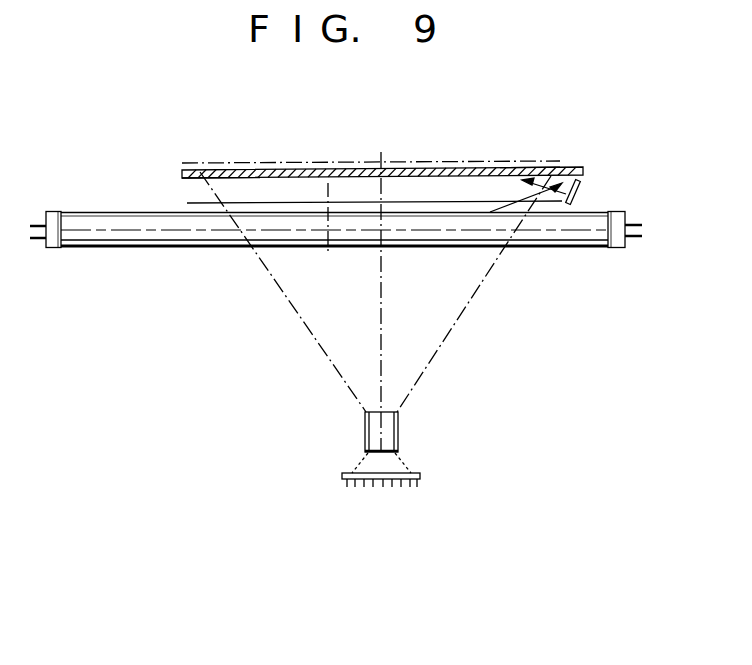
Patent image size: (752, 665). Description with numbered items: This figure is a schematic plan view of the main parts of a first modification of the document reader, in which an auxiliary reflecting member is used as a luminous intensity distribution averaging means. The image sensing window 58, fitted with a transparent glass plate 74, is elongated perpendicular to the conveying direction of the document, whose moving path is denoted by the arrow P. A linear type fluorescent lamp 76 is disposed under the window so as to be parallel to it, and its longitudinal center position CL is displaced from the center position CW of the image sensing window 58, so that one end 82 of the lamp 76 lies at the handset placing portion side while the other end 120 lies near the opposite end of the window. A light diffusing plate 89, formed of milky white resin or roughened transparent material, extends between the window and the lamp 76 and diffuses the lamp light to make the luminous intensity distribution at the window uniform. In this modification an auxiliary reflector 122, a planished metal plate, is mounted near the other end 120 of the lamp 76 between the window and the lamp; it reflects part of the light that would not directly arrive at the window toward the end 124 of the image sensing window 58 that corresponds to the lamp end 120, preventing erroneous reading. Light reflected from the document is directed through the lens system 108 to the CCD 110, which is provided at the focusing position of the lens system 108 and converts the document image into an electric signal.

The transparent glass plate 74 is at (300, 169).
The image sensing window 58 is at (224, 180).
The light diffusing plate 89 is at (188, 202).
The end of image sensing window 124 is at (527, 166).
The moving path of the document P is at (560, 161).
The auxiliary reflector 122 is at (579, 196).
The other end of lamp 120 is at (592, 248).
The end of lamp 82 is at (73, 248).
The linear type fluorescent lamp 76 is at (142, 252).
The center position of lamp CL is at (328, 252).
The center position of image sensing window CW is at (382, 296).
The lens system 108 is at (400, 439).
The CCD 110 is at (420, 477).